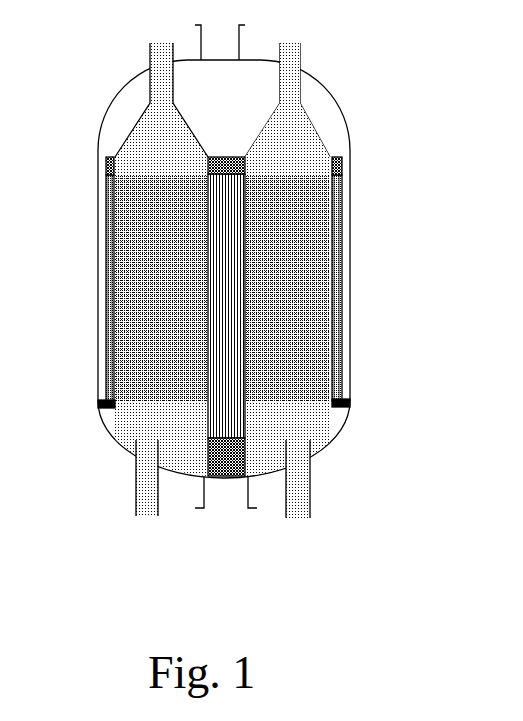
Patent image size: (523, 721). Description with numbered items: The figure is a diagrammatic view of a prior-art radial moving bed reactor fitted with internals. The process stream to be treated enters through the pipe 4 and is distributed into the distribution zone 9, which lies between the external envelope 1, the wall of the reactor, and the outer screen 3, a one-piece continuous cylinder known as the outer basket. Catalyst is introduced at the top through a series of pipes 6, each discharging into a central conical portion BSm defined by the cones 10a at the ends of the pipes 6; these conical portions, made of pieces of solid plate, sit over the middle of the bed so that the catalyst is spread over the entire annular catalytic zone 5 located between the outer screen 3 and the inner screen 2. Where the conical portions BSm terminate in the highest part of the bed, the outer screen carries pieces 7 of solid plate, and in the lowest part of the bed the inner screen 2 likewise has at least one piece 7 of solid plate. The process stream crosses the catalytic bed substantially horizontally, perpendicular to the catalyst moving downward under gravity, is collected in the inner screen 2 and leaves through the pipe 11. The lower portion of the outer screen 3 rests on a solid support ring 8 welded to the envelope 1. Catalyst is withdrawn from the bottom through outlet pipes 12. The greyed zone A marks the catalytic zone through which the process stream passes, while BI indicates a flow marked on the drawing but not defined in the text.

The external envelope 1 is at (98, 163).
The inner screen 2 is at (220, 238).
The outer screen 3 is at (108, 294).
The pipe 4 is at (230, 45).
The annular catalytic zone 5 is at (157, 333).
The pipes 6 is at (301, 66).
The pieces of solid plate 7 is at (108, 158).
The solid support ring 8 is at (100, 410).
The distribution zone 9 is at (351, 248).
The cones 10a is at (315, 130).
The pipe 11 is at (227, 497).
The outlet pipes 12 is at (298, 496).
The greyed zone A is at (170, 340).
The flow direction of retentate BI is at (140, 428).
The central conical portion BSm is at (152, 145).